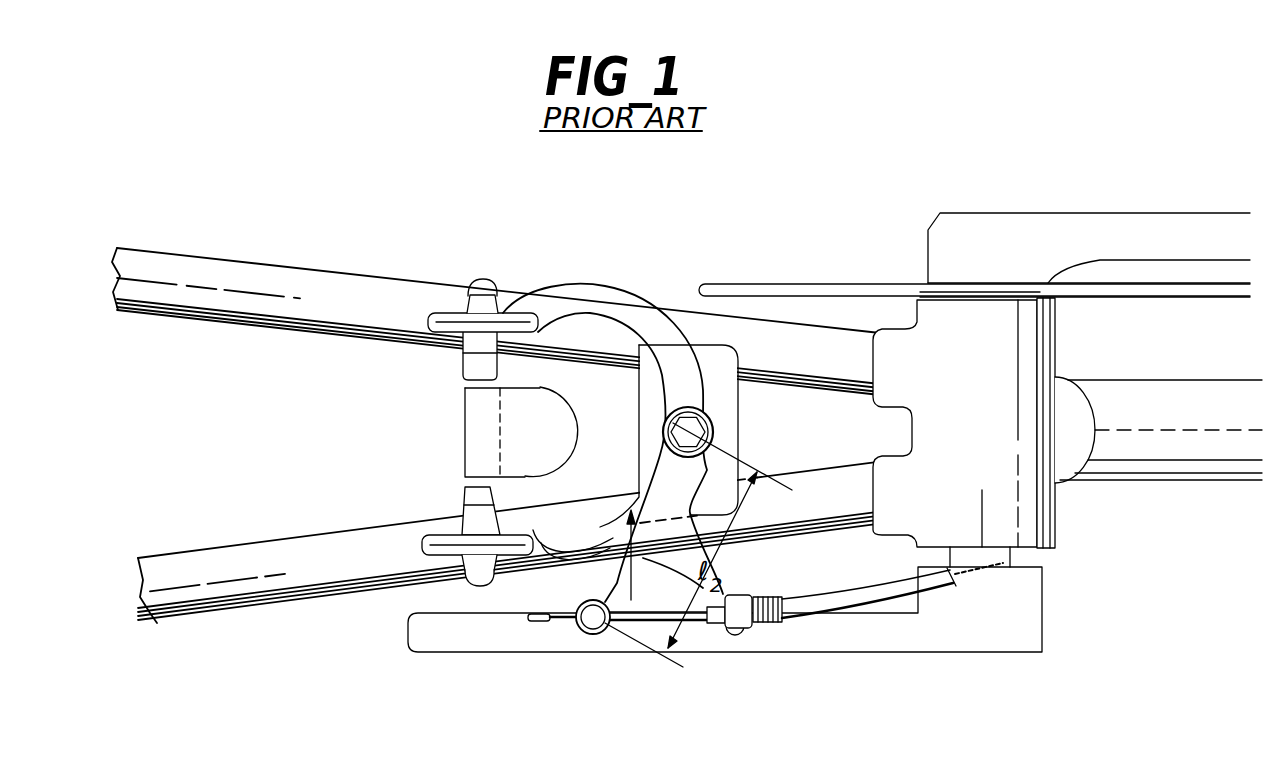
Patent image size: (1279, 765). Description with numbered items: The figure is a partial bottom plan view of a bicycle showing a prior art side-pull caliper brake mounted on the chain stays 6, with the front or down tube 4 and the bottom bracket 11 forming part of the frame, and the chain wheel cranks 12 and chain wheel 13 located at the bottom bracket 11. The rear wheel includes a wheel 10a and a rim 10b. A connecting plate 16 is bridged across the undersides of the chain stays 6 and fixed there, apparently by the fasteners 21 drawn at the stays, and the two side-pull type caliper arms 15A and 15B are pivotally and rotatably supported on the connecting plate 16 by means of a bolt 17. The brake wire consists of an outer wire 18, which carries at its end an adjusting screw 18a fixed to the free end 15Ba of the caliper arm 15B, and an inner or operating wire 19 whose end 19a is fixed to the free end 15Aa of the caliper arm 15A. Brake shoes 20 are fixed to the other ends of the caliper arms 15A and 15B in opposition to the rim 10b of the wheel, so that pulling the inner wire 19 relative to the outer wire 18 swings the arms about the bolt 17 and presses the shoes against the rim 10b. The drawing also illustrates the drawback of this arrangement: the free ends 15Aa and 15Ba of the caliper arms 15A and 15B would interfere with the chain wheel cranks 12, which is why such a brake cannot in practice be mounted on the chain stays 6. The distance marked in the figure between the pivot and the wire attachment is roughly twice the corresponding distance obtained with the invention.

The down tube 4 is at (1182, 472).
The chain stays 6 is at (290, 266).
The wheel 10a is at (588, 422).
The rim 10b is at (463, 420).
The bottom bracket 11 is at (1053, 533).
The chain wheel cranks 12 is at (1140, 213).
The chain wheel 13 is at (812, 281).
The caliper arm 15A is at (590, 282).
The free end of caliper arm 15Aa is at (593, 640).
The caliper arm 15B is at (538, 577).
The free end of caliper arm 15Ba is at (731, 635).
The connecting plate 16 is at (713, 343).
The bolt 17 is at (714, 432).
The outer wire 18 is at (927, 597).
The adjusting screw 18a is at (762, 627).
The inner wire 19 is at (983, 573).
The end of inner wire 19a is at (563, 614).
The brake shoes 20 is at (462, 362).
The mounting bolt 21 is at (483, 276).